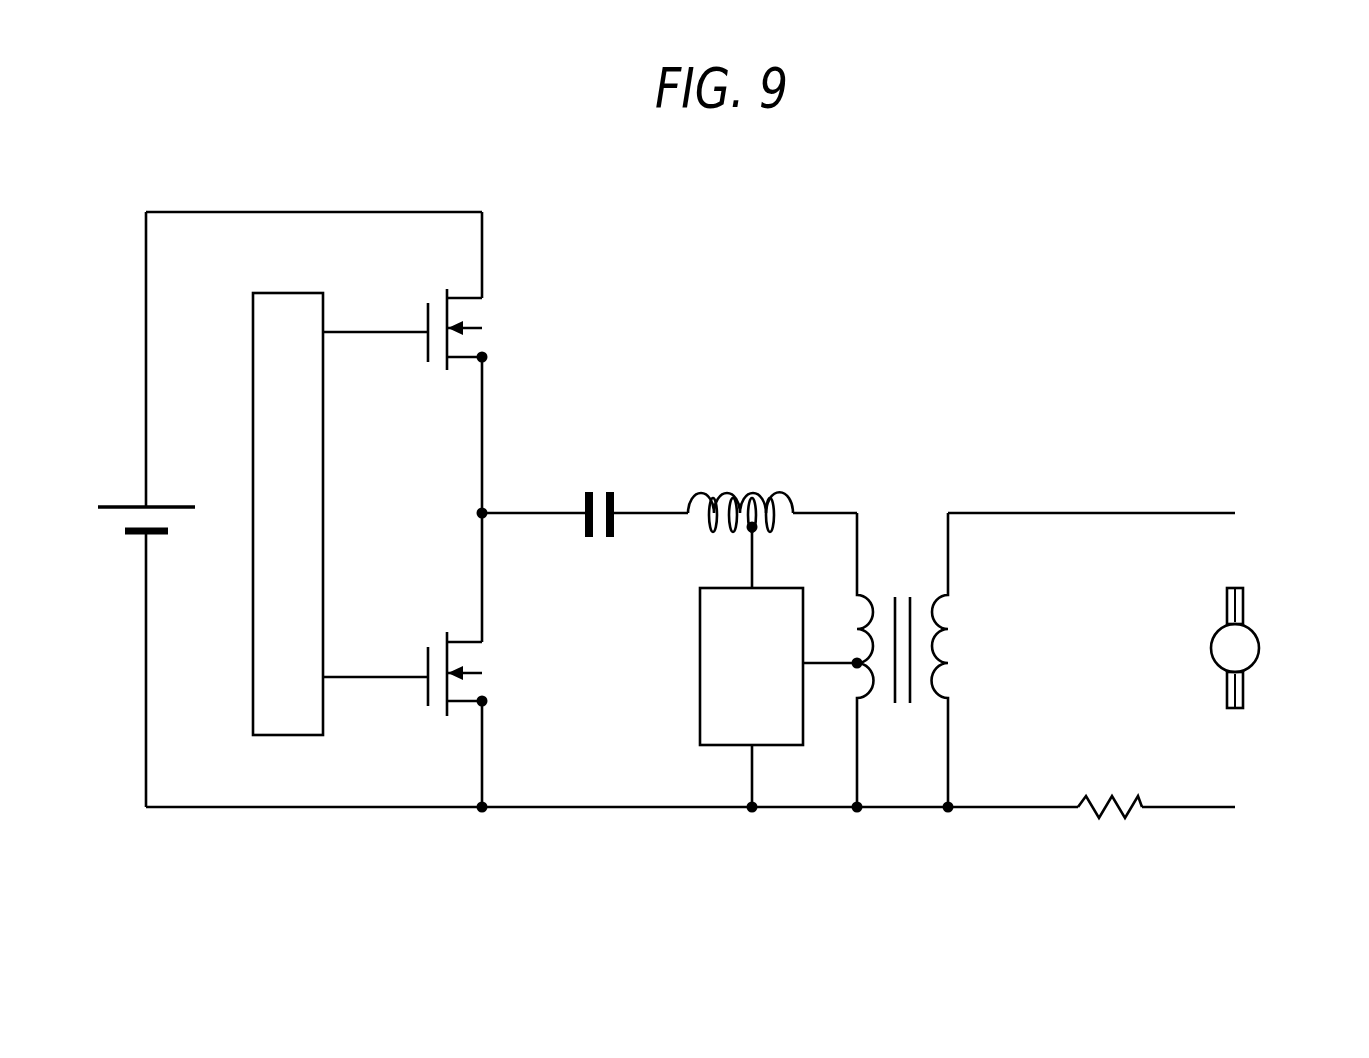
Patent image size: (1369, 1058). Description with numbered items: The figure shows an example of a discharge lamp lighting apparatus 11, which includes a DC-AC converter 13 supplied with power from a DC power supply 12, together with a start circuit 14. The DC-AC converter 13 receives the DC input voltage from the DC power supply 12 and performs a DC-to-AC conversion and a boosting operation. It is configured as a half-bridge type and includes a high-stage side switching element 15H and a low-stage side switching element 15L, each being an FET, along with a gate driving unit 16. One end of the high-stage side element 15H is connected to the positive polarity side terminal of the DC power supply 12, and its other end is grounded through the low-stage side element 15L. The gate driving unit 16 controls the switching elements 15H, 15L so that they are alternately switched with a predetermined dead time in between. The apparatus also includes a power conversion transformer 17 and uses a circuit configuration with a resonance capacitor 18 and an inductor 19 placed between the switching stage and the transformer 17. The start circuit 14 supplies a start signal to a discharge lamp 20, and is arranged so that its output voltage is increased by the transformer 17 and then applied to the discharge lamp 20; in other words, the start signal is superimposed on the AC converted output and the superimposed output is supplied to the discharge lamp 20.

The discharge lamp lighting apparatus 11 is at (993, 316).
The DC power supply 12 is at (117, 505).
The DC-AC converter 13 is at (462, 509).
The start circuit 14 is at (699, 668).
The high-stage side switching element 15H is at (428, 363).
The low-stage side switching element 15L is at (428, 706).
The gate driving unit 16 is at (253, 622).
The power conversion transformer 17 is at (950, 503).
The resonance capacitor 18 is at (617, 500).
The inductor 19 is at (725, 497).
The discharge lamp 20 is at (1255, 632).